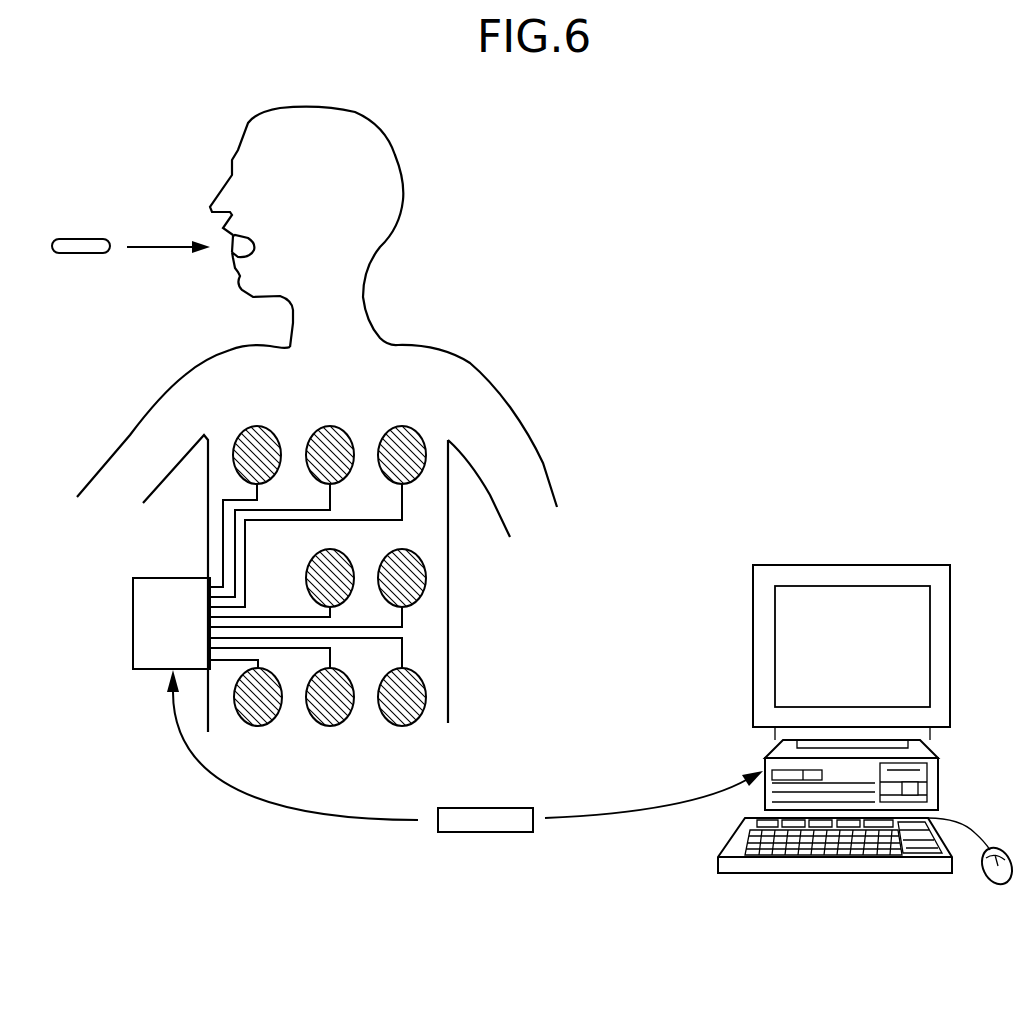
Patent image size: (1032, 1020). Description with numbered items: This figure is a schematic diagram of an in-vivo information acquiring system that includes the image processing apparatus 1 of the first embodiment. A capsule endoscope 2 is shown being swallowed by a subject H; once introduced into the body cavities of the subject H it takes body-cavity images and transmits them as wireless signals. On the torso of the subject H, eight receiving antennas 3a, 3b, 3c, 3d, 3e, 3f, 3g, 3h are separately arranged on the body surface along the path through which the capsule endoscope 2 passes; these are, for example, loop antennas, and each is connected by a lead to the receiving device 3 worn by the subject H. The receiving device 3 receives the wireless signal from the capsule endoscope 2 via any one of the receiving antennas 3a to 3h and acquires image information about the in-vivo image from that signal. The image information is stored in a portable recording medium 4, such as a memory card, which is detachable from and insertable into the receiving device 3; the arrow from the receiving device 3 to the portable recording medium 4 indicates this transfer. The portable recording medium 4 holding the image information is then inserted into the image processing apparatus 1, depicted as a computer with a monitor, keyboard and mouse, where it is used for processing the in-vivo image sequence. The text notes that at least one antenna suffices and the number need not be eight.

The image processing apparatus 1 is at (795, 565).
The capsule endoscope 2 is at (83, 238).
The receiving device 3 is at (132, 584).
The receiving antenna 3a is at (255, 427).
The receiving antenna 3b is at (328, 427).
The receiving antenna 3c is at (400, 427).
The receiving antenna 3d is at (347, 534).
The receiving antenna 3e is at (412, 551).
The receiving antenna 3f is at (258, 726).
The receiving antenna 3g is at (330, 726).
The receiving antenna 3h is at (402, 726).
The portable recording medium 4 is at (480, 833).
The subject H is at (388, 138).